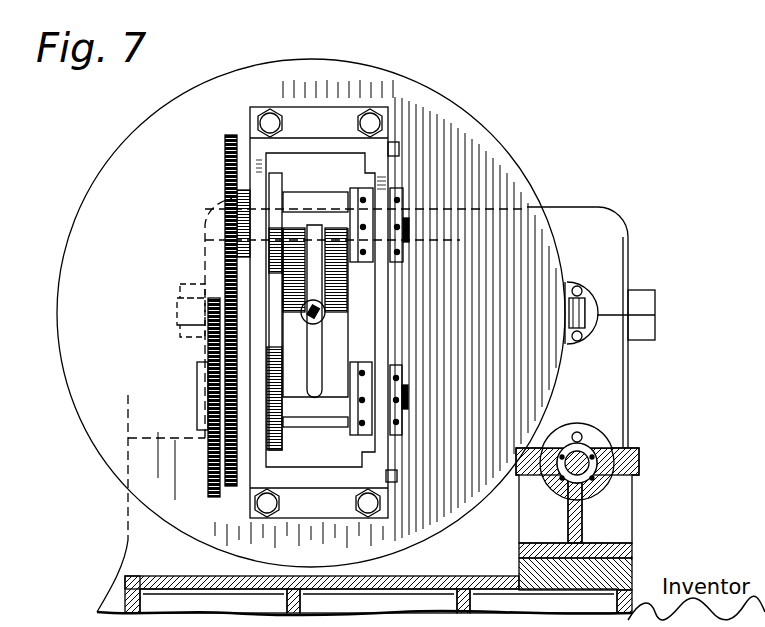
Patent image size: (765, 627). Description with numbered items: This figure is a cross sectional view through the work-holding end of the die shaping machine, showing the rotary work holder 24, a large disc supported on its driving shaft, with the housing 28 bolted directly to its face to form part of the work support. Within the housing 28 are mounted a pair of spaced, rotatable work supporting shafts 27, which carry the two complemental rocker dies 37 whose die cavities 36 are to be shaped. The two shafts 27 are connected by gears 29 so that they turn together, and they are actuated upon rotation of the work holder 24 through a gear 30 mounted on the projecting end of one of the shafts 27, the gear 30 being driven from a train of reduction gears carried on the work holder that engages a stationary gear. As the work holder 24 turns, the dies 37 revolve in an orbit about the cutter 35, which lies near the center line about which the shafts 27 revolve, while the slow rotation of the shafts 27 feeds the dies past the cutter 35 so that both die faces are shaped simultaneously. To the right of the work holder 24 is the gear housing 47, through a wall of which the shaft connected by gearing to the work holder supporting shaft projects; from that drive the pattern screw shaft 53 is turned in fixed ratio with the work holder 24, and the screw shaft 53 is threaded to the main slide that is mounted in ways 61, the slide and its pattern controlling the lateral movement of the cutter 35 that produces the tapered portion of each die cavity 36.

The rotary work holder 24 is at (515, 188).
The work supporting shafts 27 is at (410, 230).
The housing 28 is at (380, 177).
The gears 29 is at (225, 272).
The gear 30 is at (208, 440).
The cutter 35 is at (326, 311).
The die cavities 36 is at (370, 261).
The rocker dies 37 is at (348, 268).
The gear housing 47 is at (612, 378).
The screw shaft 53 is at (592, 440).
The ways 61 is at (517, 466).